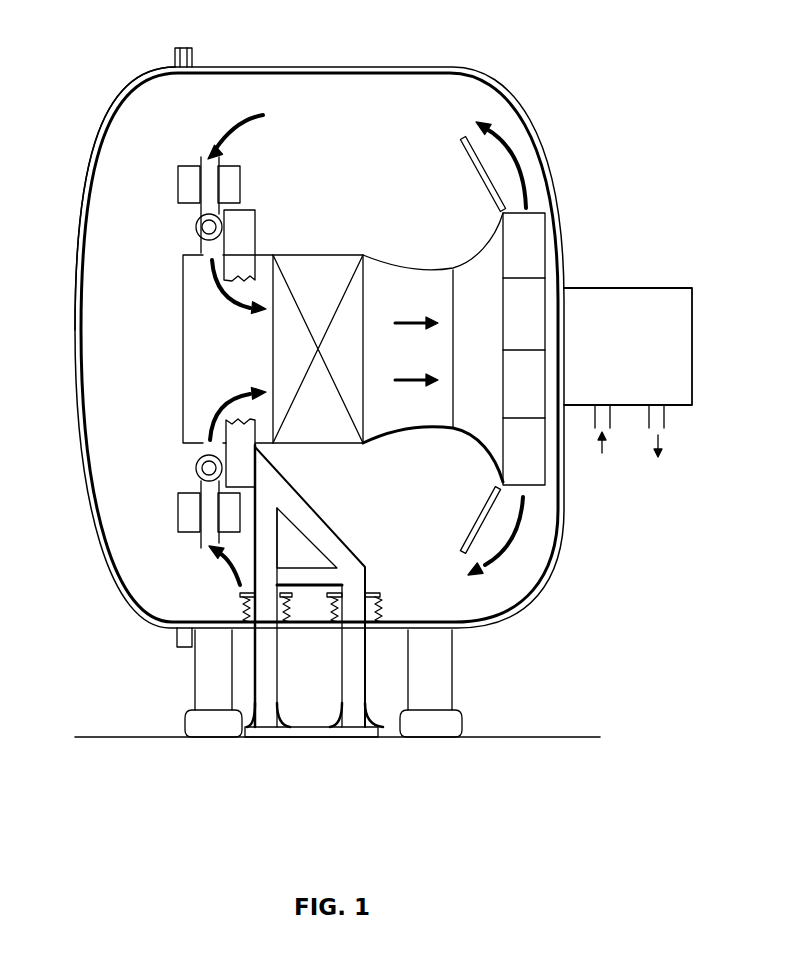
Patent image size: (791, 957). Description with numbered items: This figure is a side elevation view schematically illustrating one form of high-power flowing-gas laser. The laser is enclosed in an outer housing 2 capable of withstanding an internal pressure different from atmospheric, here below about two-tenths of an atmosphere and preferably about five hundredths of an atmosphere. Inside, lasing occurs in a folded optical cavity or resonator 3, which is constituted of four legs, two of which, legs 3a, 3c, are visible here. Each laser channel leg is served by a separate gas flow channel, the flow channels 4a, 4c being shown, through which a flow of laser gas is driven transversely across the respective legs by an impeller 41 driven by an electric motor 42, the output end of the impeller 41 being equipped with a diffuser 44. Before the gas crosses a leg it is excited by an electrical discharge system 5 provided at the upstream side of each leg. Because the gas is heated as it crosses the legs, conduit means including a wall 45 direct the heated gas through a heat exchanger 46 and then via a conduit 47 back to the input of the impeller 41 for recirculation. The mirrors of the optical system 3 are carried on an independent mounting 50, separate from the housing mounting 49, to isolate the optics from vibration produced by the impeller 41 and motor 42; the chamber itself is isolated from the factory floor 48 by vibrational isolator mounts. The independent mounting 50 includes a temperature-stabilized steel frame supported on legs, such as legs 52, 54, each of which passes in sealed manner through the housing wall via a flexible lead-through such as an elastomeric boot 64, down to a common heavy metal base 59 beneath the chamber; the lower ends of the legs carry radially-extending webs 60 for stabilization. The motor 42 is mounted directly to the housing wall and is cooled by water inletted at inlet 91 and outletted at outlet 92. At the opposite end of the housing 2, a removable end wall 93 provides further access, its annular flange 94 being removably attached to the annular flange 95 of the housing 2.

The outer housing 2 is at (360, 67).
The folded optical cavity or resonator 3 is at (188, 226).
The laser channel leg 3a is at (197, 229).
The laser channel leg 3c is at (196, 468).
The gas flow channel 4a is at (222, 166).
The gas flow channel 4c is at (200, 547).
The electrical discharge system 5 is at (185, 165).
The impeller 41 is at (510, 242).
The electric motor 42 is at (650, 297).
The diffuser 44 is at (467, 153).
The wall 45 is at (183, 343).
The heat exchanger 46 is at (300, 255).
The conduit 47 is at (387, 267).
The factory floor 48 is at (513, 737).
The housing mounting 49 is at (443, 677).
The independent mounting 50 is at (274, 455).
The leg 52 is at (273, 676).
The leg 54 is at (352, 676).
The heavy metal base 59 is at (310, 732).
The radially-extending webs 60 is at (383, 720).
The elastomeric boot 64 is at (381, 603).
The water inlet 91 is at (595, 417).
The water outlet 92 is at (665, 418).
The end wall 93 is at (77, 242).
The annular flange 94 is at (175, 58).
The annular flange 95 is at (193, 54).